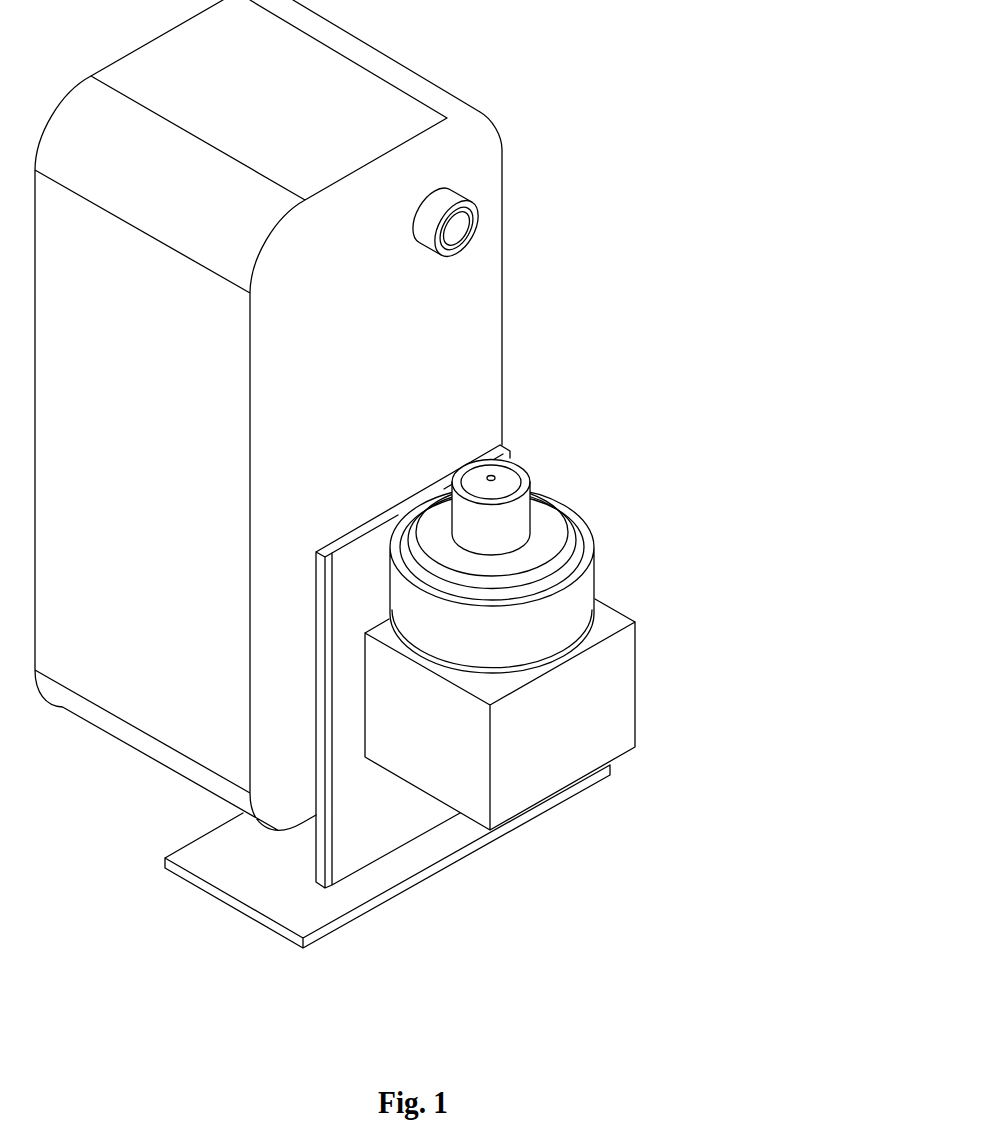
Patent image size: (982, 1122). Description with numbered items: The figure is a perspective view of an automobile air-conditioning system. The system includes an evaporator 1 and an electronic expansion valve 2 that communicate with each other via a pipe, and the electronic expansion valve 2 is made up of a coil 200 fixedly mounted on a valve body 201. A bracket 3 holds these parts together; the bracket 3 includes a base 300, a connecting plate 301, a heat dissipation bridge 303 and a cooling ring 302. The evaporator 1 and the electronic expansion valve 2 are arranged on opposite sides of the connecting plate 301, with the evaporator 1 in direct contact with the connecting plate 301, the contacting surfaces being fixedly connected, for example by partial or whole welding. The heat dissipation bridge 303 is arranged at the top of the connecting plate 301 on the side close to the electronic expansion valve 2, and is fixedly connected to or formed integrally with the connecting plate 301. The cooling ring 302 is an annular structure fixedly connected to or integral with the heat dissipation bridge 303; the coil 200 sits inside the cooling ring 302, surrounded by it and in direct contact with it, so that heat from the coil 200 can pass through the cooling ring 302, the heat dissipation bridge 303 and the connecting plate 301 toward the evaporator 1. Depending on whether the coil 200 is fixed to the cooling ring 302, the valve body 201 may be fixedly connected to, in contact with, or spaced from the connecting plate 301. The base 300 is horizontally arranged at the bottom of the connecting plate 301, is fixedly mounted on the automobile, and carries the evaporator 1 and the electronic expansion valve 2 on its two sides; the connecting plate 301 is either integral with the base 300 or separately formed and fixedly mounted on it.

The evaporator 1 is at (340, 97).
The electronic expansion valve 2 is at (579, 639).
The coil 200 is at (568, 543).
The valve body 201 is at (580, 737).
The bracket 3 is at (479, 616).
The base 300 is at (373, 888).
The connecting plate 301 is at (385, 802).
The cooling ring 302 is at (572, 593).
The heat dissipation bridge 303 is at (418, 492).